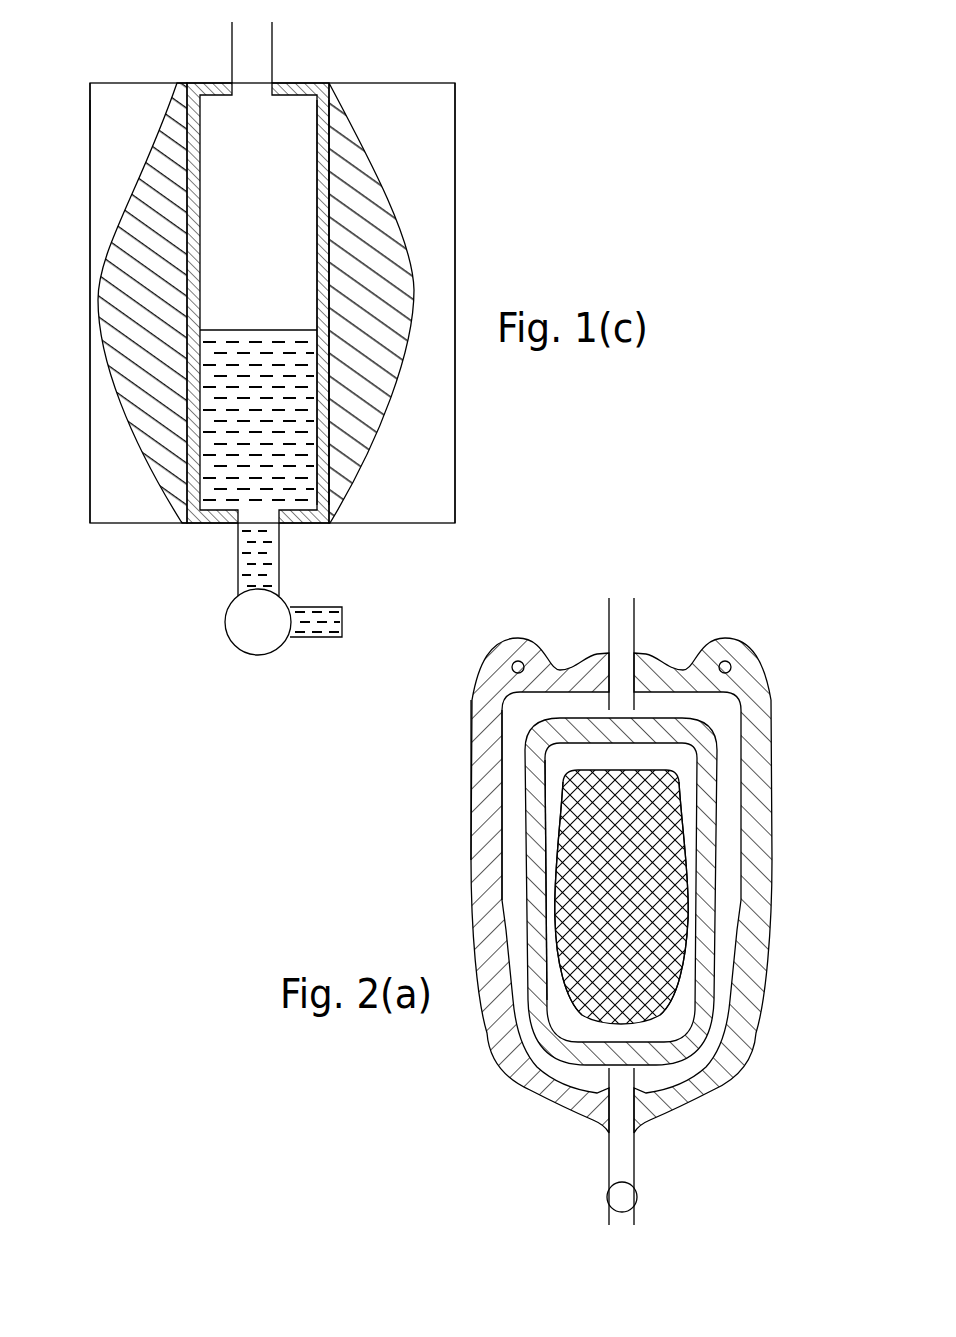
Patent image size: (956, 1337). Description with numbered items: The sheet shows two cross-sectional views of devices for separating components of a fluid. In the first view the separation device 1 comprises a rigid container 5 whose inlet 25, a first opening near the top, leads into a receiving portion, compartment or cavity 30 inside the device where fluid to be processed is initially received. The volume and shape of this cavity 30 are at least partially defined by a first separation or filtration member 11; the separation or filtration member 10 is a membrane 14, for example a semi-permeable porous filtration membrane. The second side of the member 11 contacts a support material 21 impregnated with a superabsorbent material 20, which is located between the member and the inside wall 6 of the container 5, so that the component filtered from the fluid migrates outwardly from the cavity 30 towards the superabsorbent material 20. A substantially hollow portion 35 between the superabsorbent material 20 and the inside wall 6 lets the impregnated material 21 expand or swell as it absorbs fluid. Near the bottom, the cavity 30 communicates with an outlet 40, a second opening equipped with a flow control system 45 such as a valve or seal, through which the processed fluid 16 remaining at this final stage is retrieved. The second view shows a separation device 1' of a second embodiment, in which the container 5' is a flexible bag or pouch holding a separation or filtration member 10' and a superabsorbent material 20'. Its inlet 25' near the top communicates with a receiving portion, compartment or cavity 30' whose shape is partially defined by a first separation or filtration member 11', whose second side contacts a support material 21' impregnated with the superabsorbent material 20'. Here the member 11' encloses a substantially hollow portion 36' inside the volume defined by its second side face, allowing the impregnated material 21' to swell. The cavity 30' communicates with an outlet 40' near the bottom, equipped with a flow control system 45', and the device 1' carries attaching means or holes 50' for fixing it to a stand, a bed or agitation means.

In FIG. 1C, the separation device 1 is at (272, 270).
In FIG. 1C, the container 5 is at (69, 303).
In FIG. 1C, the inside wall 6 is at (95, 106).
In FIG. 1C, the separation or filtration member 10 is at (258, 303).
In FIG. 1C, the first separation or filtration member 11 is at (294, 302).
In FIG. 1C, the membrane 14 is at (321, 171).
In FIG. 1C, the processed fluid 16 is at (253, 331).
In FIG. 1C, the superabsorbent material 20 is at (371, 303).
In FIG. 1C, the support material 21 is at (261, 303).
In FIG. 1C, the inlet 25 is at (275, 52).
In FIG. 1C, the receiving portion, compartment or cavity 30 is at (258, 353).
In FIG. 1C, the substantially hollow portion 35 is at (435, 482).
In FIG. 1C, the outlet 40 is at (284, 559).
In FIG. 1C, the flow control system 45 is at (261, 622).
In FIG. 2A, the separation device 1' is at (485, 715).
In FIG. 2A, the container 5' is at (604, 885).
In FIG. 2A, the separation or filtration member 10' is at (668, 891).
In FIG. 2A, the first separation or filtration member 11' is at (678, 880).
In FIG. 2A, the superabsorbent material 20' is at (708, 897).
In FIG. 2A, the support material 21' is at (722, 898).
In FIG. 2A, the inlet 25' is at (593, 654).
In FIG. 2A, the receiving portion, compartment or cavity 30' is at (470, 805).
In FIG. 2A, the substantially hollow portion 36' is at (685, 898).
In FIG. 2A, the outlet 40' is at (598, 1146).
In FIG. 2A, the flow control system 45' is at (599, 1197).
In FIG. 2A, the attaching means or holes 50' is at (628, 656).